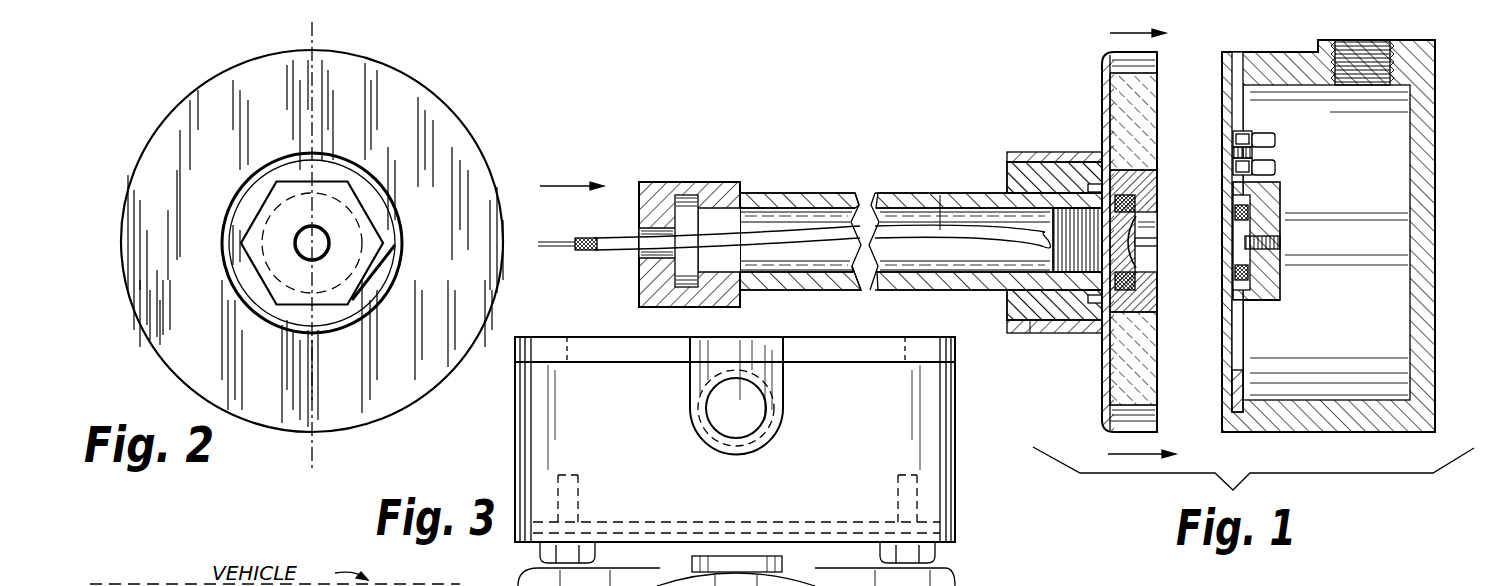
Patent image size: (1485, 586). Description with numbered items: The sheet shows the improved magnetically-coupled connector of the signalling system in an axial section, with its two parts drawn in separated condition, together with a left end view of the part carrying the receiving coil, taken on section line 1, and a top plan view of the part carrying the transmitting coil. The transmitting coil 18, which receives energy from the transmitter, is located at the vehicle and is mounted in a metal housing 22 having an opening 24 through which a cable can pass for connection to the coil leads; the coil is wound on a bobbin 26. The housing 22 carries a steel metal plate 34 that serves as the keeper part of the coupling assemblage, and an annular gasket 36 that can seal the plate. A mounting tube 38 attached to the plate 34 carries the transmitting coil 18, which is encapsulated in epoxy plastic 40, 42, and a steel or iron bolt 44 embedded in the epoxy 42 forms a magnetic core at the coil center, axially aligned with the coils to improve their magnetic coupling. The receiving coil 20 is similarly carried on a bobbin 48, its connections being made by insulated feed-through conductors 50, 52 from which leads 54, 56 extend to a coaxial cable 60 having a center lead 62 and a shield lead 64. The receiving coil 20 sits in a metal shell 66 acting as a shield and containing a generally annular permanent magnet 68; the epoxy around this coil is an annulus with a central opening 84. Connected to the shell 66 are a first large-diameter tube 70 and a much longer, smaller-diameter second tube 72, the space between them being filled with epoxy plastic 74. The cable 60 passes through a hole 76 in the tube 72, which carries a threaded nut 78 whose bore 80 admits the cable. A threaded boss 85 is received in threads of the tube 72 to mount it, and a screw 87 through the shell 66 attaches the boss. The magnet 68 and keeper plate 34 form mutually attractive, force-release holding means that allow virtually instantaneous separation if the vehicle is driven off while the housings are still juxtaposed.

In FIG. 2, the section line 1 is at (318, 34).
In FIG. 1, the transmitting coil 18 is at (1248, 302).
In FIG. 1, the receiving coil 20 is at (1140, 200).
In FIG. 3, the metal housing 22 is at (541, 434).
In FIG. 1, the metal housing 22 is at (1428, 132).
In FIG. 3, the opening 24 is at (750, 403).
In FIG. 1, the opening 24 is at (1365, 55).
In FIG. 1, the bobbin 26 is at (1280, 210).
In FIG. 3, the metal plate 34 is at (675, 537).
In FIG. 1, the metal plate 34 is at (1228, 382).
In FIG. 3, the annular gasket 36 is at (805, 527).
In FIG. 1, the annular gasket 36 is at (1244, 380).
In FIG. 1, the mounting tube 38 is at (1270, 184).
In FIG. 1, the epoxy plastic 40 is at (1163, 241).
In FIG. 1, the epoxy plastic 42 is at (1281, 288).
In FIG. 1, the bolt 44 is at (1281, 243).
In FIG. 1, the bobbin 48 is at (1148, 296).
In FIG. 1, the insulated feed-through conductor 50 is at (1092, 182).
In FIG. 1, the insulated feed-through conductor 52 is at (1094, 330).
In FIG. 1, the lead 54 is at (1070, 164).
In FIG. 1, the lead 56 is at (1068, 322).
In FIG. 1, the cable 60 is at (940, 195).
In FIG. 1, the center lead 62 is at (545, 241).
In FIG. 1, the shield lead 64 is at (588, 252).
In FIG. 2, the metal housing or shell 66 is at (447, 118).
In FIG. 1, the metal housing or shell 66 is at (1104, 108).
In FIG. 1, the permanent magnet 68 is at (1150, 122).
In FIG. 2, the first large-diameter tube 70 is at (358, 165).
In FIG. 1, the first large-diameter tube 70 is at (1030, 333).
In FIG. 1, the second smaller-diameter tube 72 is at (788, 195).
In FIG. 2, the epoxy plastic 74 is at (294, 175).
In FIG. 1, the epoxy plastic 74 is at (1010, 312).
In FIG. 1, the hole 76 is at (1050, 238).
In FIG. 2, the threaded fitting or nut 78 is at (363, 300).
In FIG. 1, the threaded fitting or nut 78 is at (663, 188).
In FIG. 2, the bore 80 is at (318, 256).
In FIG. 1, the bore 80 is at (640, 232).
In FIG. 1, the central opening 84 is at (1150, 250).
In FIG. 1, the threaded boss 85 is at (1065, 245).
In FIG. 1, the screw 87 is at (1142, 229).